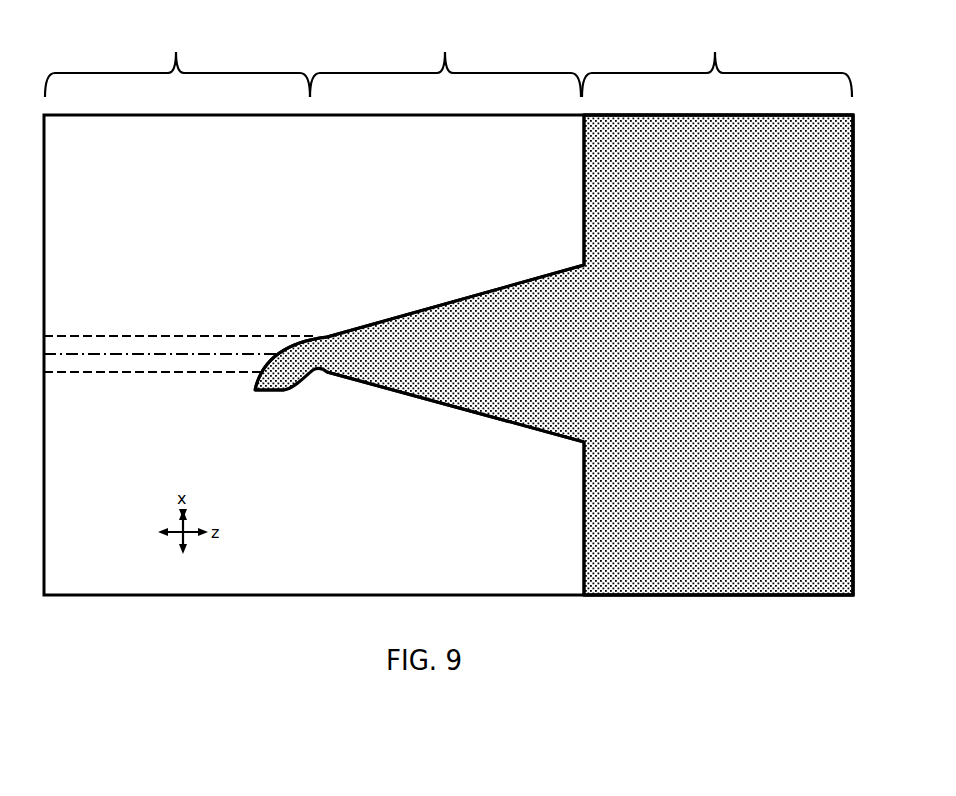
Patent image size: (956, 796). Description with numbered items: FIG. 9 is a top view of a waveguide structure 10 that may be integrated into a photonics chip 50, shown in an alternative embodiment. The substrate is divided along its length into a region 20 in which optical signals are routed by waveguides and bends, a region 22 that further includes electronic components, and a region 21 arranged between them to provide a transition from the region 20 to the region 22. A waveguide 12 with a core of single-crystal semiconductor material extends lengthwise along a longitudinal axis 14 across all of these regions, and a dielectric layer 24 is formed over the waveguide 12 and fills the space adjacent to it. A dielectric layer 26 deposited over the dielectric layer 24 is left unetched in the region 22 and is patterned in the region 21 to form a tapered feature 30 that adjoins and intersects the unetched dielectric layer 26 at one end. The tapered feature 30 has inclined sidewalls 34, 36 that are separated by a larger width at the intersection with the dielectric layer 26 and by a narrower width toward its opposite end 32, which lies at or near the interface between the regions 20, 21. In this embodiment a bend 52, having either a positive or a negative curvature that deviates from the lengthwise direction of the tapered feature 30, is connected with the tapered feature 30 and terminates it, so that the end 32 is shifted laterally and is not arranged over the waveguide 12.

The photonics chip 50 is at (448, 55).
The region 20 is at (177, 59).
The region 21 is at (445, 59).
The region 22 is at (717, 59).
The waveguide structure 10 is at (173, 200).
The dielectric layer 26 is at (615, 215).
The sidewall 34 is at (413, 313).
The sidewall 36 is at (444, 405).
The tapered feature 30 is at (392, 394).
The terminating end 32 is at (264, 393).
The bend 52 is at (296, 343).
The waveguide 12 is at (118, 373).
The longitudinal axis 14 is at (73, 356).
The dielectric layer 24 is at (103, 542).